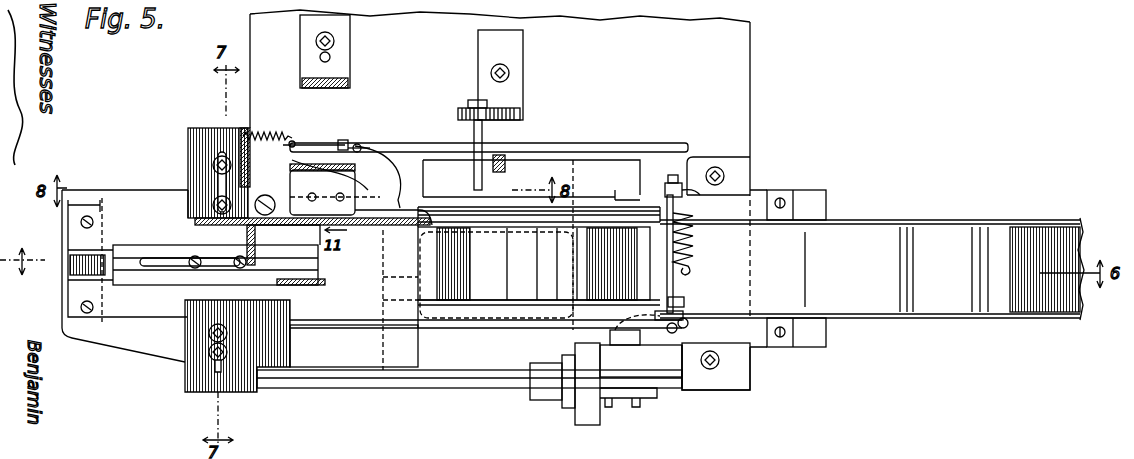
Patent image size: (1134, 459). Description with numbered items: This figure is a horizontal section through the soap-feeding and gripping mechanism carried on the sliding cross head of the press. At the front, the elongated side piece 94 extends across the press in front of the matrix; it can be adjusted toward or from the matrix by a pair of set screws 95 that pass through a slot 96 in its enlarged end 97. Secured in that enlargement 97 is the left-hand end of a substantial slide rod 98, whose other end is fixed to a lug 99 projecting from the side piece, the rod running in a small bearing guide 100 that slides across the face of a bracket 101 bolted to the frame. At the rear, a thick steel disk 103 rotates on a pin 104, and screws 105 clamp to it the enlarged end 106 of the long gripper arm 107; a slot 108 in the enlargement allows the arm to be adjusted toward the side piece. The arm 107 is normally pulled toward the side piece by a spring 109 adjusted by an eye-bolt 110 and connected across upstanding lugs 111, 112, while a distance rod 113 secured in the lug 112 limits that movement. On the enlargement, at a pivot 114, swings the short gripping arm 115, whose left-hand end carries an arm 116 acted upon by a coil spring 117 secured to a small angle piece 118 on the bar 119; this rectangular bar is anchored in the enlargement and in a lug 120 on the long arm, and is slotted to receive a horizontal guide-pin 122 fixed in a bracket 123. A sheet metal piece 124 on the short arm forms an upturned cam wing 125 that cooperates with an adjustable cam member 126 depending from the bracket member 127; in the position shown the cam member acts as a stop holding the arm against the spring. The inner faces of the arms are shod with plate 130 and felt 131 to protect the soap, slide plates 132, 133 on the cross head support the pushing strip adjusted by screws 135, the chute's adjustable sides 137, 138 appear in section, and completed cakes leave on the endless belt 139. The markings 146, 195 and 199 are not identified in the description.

The side piece 94 is at (282, 292).
The set screws 95 is at (168, 338).
The slot 96 is at (223, 370).
The enlarged end 97 is at (195, 381).
The slide rod 98 is at (308, 385).
The lug 99 is at (752, 367).
The bearing guide 100 is at (548, 398).
The bracket 101 is at (590, 424).
The disk 103 is at (195, 205).
The pin 104 is at (190, 216).
The screws 105 is at (213, 200).
The enlarged end 106 is at (200, 134).
The long gripper arm 107 is at (572, 217).
The slot 108 is at (214, 165).
The spring 109 is at (695, 246).
The eye-bolt 110 is at (688, 294).
The lug 111 is at (665, 322).
The lug 112 is at (695, 165).
The distance rod 113 is at (665, 210).
The pivot 114 is at (266, 194).
The short gripping arm 115 is at (385, 196).
The arm 116 is at (243, 146).
The coil spring 117 is at (268, 134).
The angle piece 118 is at (340, 140).
The bar 119 is at (430, 143).
The lug 120 is at (676, 182).
The guide-pin 122 is at (476, 174).
The bracket 123 is at (505, 110).
The sheet metal piece 124 is at (342, 184).
The cam wing 125 is at (366, 188).
The cam member 126 is at (358, 143).
The bracket member 127 is at (350, 68).
The plate 130 is at (287, 235).
The felt 131 is at (528, 225).
The slide plate 132 is at (78, 232).
The slide plate 133 is at (78, 290).
The screws 135 is at (195, 270).
The side 137 is at (247, 235).
The side 138 is at (305, 286).
The endless belt 139 is at (958, 276).
The block 146 is at (505, 162).
The barrel lower wall 195 is at (896, 318).
The barrel upper wall 199 is at (896, 220).